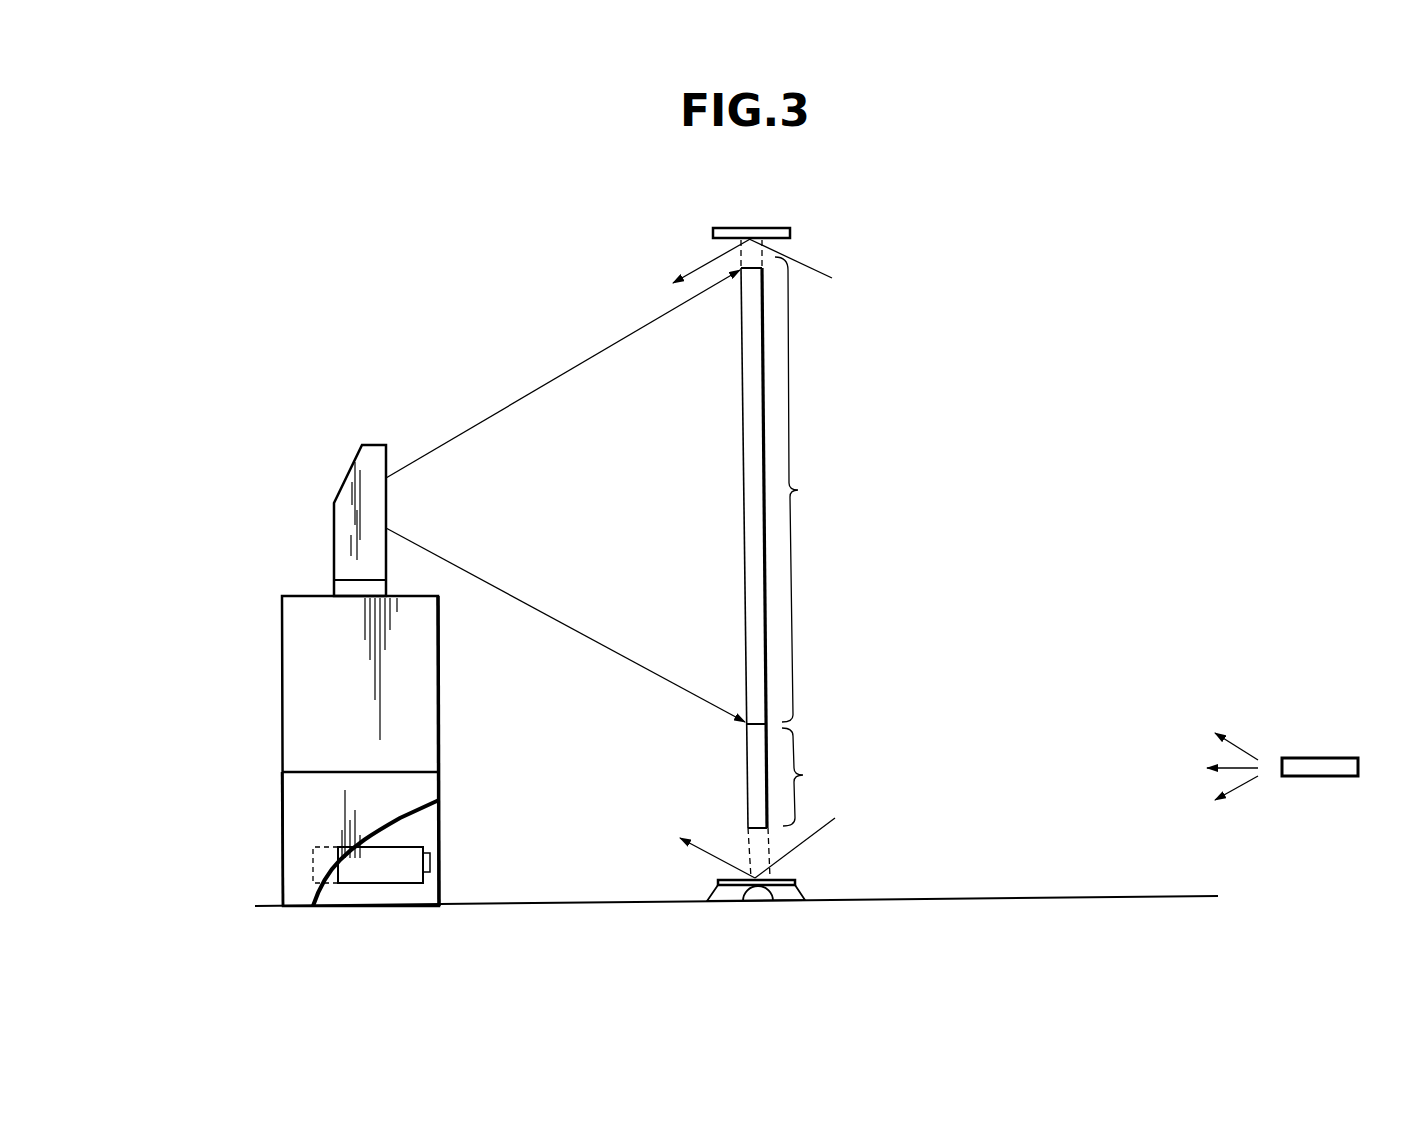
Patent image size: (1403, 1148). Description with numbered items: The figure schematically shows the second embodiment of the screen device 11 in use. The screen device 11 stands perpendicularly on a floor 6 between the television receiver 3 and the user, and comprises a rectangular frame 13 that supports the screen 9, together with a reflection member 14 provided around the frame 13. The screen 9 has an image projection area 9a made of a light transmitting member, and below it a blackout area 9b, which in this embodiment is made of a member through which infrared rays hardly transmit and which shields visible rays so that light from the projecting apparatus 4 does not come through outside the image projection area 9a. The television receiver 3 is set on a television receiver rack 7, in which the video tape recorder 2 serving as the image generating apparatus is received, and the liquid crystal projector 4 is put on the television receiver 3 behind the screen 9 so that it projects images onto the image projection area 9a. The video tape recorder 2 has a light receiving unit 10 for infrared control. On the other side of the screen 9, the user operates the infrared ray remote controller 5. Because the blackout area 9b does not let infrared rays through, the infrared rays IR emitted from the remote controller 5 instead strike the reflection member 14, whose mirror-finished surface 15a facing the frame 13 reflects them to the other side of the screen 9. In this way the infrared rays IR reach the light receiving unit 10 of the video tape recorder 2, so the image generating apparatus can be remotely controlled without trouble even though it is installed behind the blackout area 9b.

The video tape recorder 2 is at (413, 847).
The television receiver 3 is at (282, 650).
The projecting apparatus 4 is at (347, 473).
The infrared ray remote controller 5 is at (1308, 758).
The floor 6 is at (1000, 897).
The television receiver rack 7 is at (283, 817).
The screen 9 is at (763, 385).
The image projection area 9a is at (812, 489).
The blackout area 9b is at (814, 777).
The light receiving unit 10 is at (430, 862).
The screen device 11 is at (763, 223).
The rectangular frame 13 is at (757, 316).
The reflection member 14 is at (722, 228).
The surface 15a is at (783, 244).
The infrared rays IR is at (815, 266).